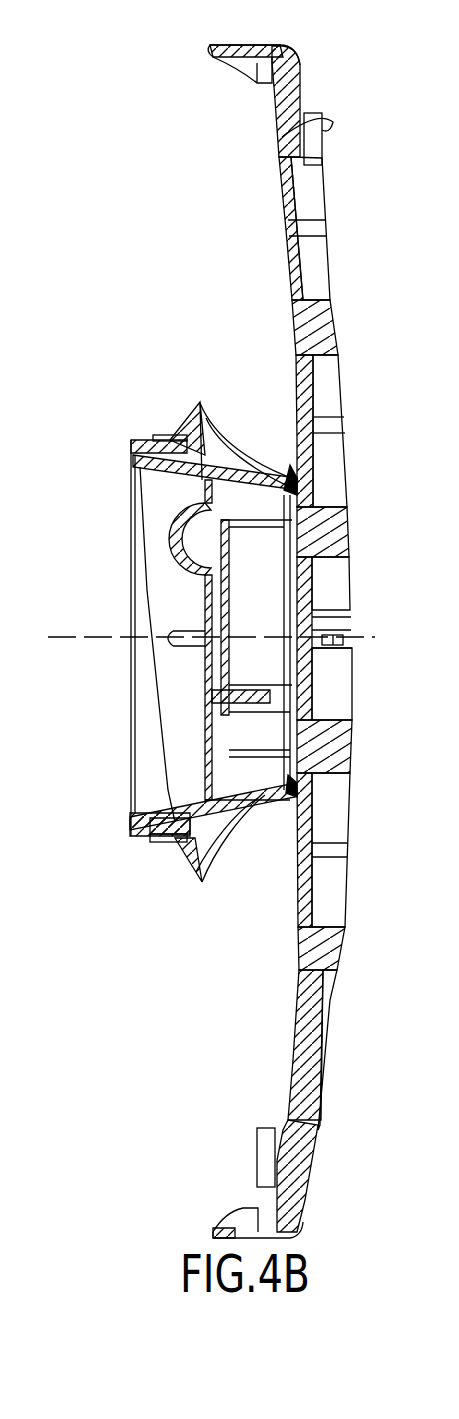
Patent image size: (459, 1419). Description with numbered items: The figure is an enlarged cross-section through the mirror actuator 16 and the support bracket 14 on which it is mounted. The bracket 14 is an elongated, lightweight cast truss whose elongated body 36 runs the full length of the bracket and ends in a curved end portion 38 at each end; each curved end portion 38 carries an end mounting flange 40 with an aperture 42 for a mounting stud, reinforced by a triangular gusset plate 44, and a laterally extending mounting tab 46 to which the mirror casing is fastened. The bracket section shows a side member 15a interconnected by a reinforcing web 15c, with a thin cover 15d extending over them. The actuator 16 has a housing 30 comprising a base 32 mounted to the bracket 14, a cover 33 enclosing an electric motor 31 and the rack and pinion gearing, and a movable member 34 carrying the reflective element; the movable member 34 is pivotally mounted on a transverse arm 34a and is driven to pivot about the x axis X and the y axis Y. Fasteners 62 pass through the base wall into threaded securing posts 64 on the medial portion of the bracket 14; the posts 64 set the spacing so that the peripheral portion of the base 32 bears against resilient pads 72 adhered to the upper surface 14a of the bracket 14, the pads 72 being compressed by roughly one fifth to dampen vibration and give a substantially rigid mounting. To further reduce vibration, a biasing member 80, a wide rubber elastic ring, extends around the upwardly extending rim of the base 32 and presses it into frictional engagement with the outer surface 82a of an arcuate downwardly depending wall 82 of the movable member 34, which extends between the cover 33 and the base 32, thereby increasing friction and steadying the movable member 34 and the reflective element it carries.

The support bracket 14 is at (278, 1061).
The upper surface 14a is at (297, 428).
The side member 15a is at (327, 892).
The reinforcing web 15c is at (345, 968).
The thin cover 15d is at (287, 1035).
The actuator 16 is at (122, 490).
The housing 30 is at (122, 762).
The electric motor 31 is at (190, 540).
The base 32 is at (258, 835).
The cover 33 is at (205, 727).
The movable member 34 is at (137, 443).
The transverse arm 34a is at (140, 563).
The elongated body 36 is at (292, 320).
The curved end portion 38 is at (272, 202).
The end mounting flange 40 is at (210, 45).
The aperture 42 is at (247, 70).
The gusset plate 44 is at (237, 1223).
The mounting tab 46 is at (290, 128).
The fastener 62 is at (212, 684).
The securing post 64 is at (275, 687).
The resilient pad 72 is at (295, 470).
The biasing member 80 is at (185, 418).
The arcuate downwardly depending wall 82 is at (163, 840).
The outer surface 82a is at (172, 863).
The x axis X is at (105, 637).
The y axis Y is at (222, 635).